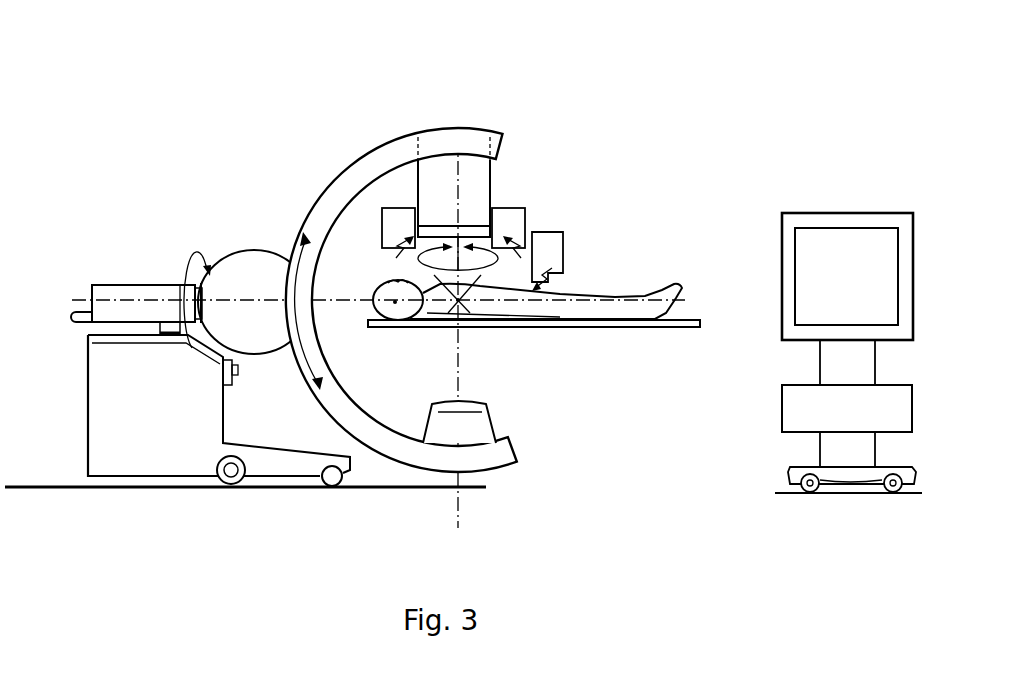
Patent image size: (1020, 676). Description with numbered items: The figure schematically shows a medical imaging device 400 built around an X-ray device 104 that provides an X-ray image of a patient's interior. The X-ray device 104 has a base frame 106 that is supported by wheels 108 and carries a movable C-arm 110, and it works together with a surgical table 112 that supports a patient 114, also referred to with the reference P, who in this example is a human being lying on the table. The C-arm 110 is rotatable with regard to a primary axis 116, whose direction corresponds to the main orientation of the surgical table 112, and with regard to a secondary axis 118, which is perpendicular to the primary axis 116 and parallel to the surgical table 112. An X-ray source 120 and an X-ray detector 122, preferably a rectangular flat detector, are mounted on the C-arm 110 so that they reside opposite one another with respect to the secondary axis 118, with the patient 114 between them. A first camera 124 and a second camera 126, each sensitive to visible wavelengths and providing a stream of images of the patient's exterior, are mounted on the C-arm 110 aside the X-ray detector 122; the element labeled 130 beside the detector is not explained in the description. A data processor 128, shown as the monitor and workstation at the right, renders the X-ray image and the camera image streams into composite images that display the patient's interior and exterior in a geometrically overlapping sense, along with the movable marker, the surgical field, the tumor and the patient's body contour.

The medical imaging device 400 is at (270, 182).
The X-ray device 104 is at (97, 394).
The base frame 106 is at (157, 392).
The wheels 108 is at (228, 494).
The C-arm 110 is at (368, 168).
The surgical table 112 is at (672, 329).
The patient 114 is at (581, 306).
The primary axis 116 is at (160, 300).
The secondary axis 118 is at (455, 305).
The X-ray source 120 is at (488, 421).
The X-ray detector 122 is at (449, 227).
The first camera 124 is at (520, 218).
The second camera 126 is at (556, 240).
The data processor 128 is at (824, 213).
The collimator blade 130 is at (392, 227).
The patient P is at (634, 306).